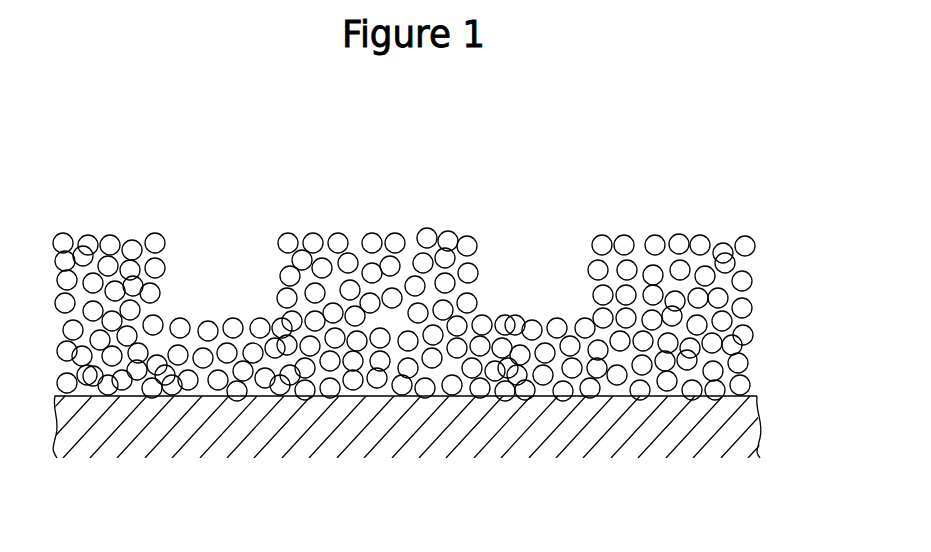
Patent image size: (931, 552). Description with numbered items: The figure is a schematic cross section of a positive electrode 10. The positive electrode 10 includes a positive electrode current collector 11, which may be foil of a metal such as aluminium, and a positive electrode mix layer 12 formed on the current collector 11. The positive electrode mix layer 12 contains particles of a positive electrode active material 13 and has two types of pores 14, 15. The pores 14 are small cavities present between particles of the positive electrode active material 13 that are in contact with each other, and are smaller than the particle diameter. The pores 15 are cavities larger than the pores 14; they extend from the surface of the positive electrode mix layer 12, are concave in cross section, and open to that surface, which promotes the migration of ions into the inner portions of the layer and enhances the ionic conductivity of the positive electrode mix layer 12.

The positive electrode 10 is at (729, 97).
The positive electrode current collector 11 is at (607, 442).
The positive electrode mix layer 12 is at (778, 233).
The positive electrode active material 13 is at (603, 243).
The pore 14 is at (685, 238).
The pore 15 is at (232, 285).